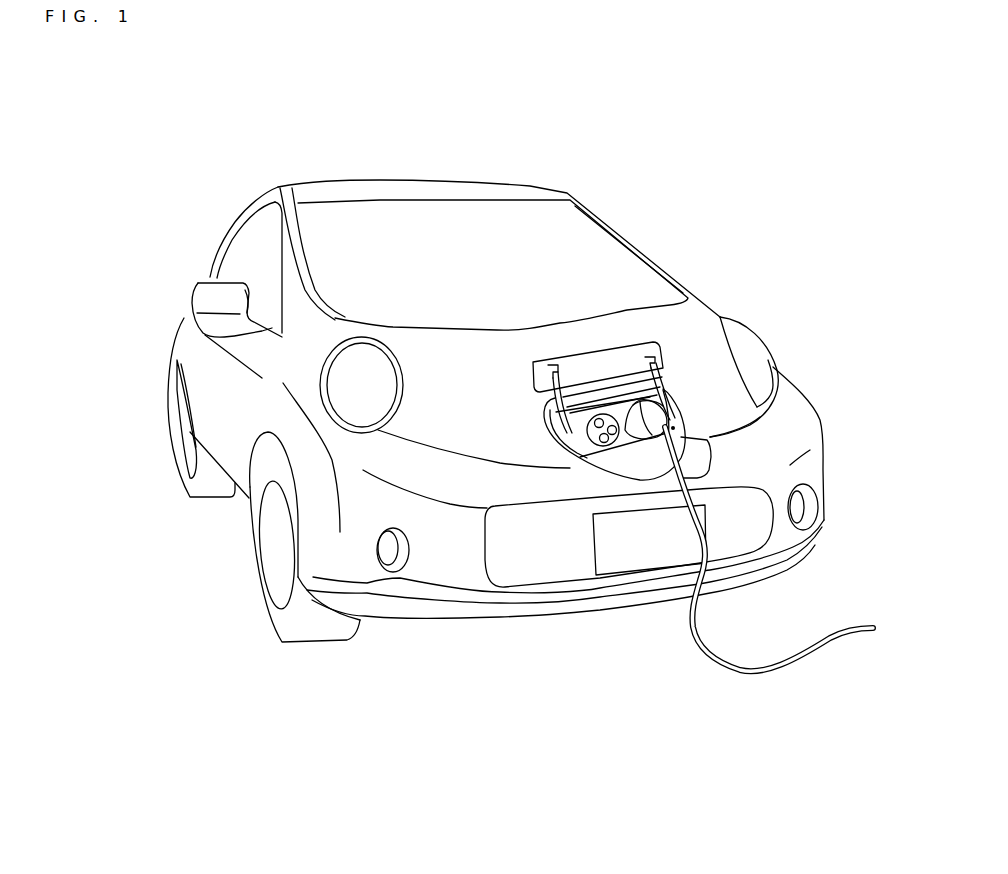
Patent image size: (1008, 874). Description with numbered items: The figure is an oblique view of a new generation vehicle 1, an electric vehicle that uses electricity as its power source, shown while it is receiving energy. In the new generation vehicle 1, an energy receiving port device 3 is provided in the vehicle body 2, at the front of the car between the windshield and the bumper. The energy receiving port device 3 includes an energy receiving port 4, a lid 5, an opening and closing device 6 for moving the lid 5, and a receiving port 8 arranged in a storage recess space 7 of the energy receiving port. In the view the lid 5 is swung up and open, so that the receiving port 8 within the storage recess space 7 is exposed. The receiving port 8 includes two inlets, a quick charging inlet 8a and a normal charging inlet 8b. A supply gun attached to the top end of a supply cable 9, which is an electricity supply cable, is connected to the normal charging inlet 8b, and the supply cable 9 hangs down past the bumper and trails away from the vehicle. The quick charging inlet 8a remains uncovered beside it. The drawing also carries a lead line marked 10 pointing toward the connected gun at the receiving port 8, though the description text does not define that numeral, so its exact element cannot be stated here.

The new generation vehicle 1 is at (624, 131).
The vehicle body 2 is at (447, 180).
The energy receiving port device 3 is at (688, 352).
The energy receiving port 4 is at (677, 414).
The lid 5 is at (603, 350).
The opening and closing device 6 is at (546, 380).
The storage recess space 7 is at (620, 442).
The receiving port 8 is at (563, 417).
The quick charging inlet 8a is at (587, 432).
The normal charging inlet 8b is at (633, 442).
The supply cable 9 is at (683, 651).
The connector plug 10 is at (619, 441).